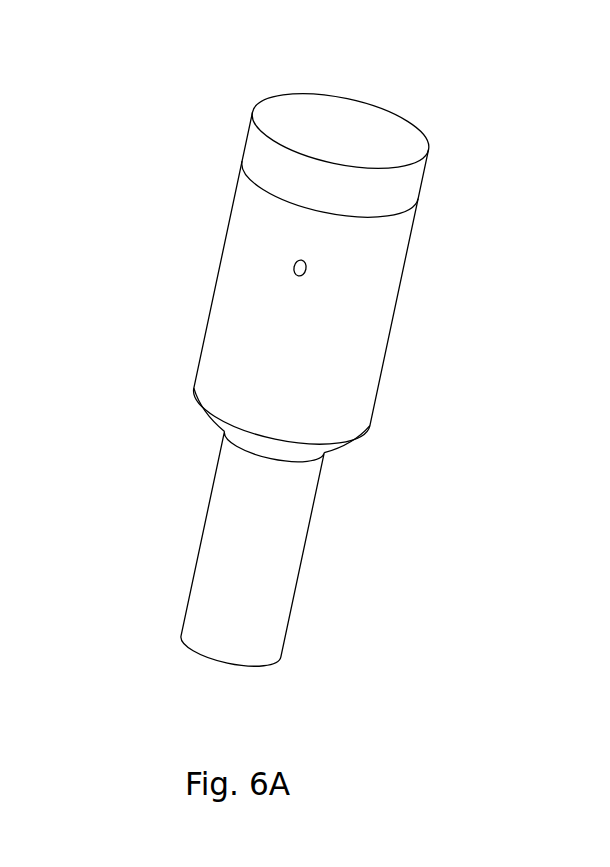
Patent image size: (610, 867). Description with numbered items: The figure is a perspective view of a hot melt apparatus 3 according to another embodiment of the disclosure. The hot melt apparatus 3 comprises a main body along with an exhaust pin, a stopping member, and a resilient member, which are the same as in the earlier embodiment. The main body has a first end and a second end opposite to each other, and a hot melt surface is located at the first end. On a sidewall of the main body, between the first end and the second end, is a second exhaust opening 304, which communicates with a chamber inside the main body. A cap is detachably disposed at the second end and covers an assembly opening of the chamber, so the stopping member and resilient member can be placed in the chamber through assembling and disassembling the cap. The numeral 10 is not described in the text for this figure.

The hot melt apparatus 3 is at (310, 362).
The cylindrical body 10 is at (314, 381).
The second exhaust opening 304 is at (297, 260).